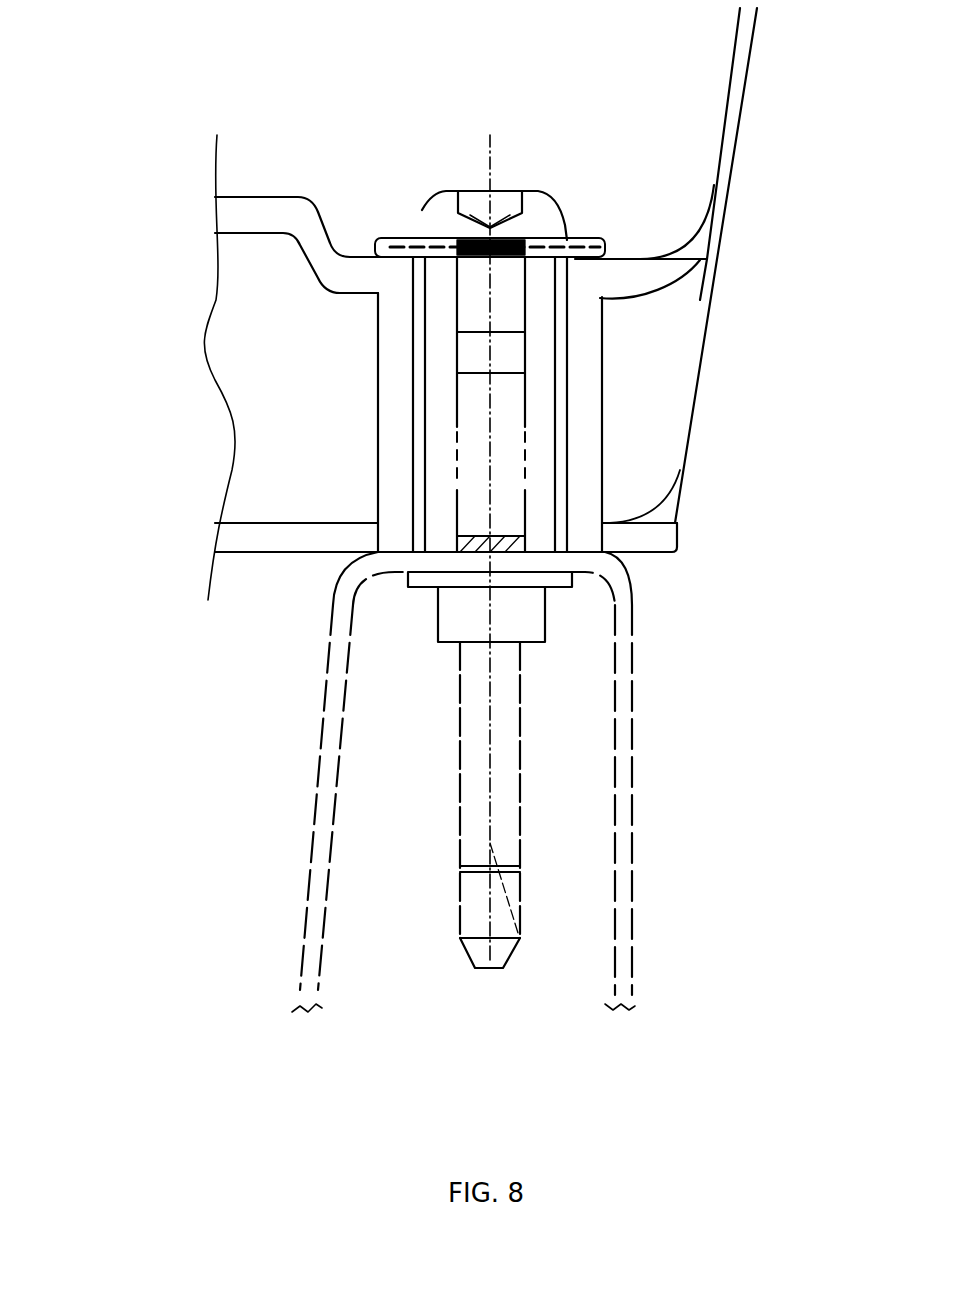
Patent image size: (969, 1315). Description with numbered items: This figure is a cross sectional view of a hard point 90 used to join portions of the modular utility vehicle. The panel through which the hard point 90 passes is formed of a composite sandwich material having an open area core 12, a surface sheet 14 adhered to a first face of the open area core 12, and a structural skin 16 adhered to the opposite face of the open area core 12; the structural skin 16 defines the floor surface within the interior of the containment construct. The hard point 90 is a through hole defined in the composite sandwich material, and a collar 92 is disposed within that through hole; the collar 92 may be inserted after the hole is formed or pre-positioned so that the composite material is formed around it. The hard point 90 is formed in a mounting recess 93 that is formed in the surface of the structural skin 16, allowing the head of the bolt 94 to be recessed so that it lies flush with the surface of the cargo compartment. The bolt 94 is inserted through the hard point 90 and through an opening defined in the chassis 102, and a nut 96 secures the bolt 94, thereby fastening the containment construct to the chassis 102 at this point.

The open area core 12 is at (265, 435).
The surface sheet 14 is at (290, 532).
The structural skin 16 is at (275, 196).
The hard point 90 is at (568, 259).
The collar 92 is at (570, 462).
The mounting recess 93 is at (630, 250).
The bolt 94 is at (545, 210).
The nut 96 is at (533, 625).
The chassis 102 is at (627, 648).